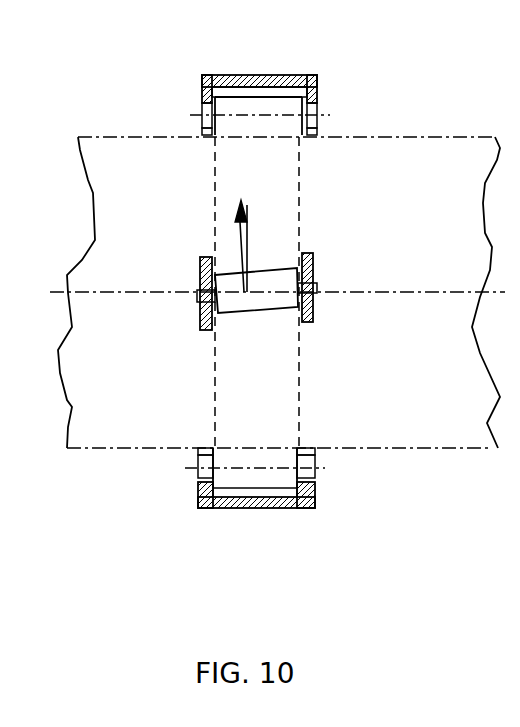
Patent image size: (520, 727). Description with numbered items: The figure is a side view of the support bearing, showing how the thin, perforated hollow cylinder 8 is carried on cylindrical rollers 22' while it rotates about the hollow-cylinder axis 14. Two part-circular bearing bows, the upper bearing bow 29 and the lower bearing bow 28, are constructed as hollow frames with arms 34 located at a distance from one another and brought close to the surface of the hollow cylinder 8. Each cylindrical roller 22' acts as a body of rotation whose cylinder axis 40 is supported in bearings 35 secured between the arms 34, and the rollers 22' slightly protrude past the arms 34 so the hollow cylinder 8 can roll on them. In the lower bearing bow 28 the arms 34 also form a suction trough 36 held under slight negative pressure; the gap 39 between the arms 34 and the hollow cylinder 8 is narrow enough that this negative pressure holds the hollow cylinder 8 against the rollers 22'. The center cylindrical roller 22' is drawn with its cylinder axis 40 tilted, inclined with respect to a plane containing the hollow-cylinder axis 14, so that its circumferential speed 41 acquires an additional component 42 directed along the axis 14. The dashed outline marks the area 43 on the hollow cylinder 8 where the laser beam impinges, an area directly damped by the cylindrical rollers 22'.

The hollow cylinder 8 is at (105, 137).
The hollow-cylinder axis 14 is at (135, 292).
The cylindrical roller 22' is at (272, 295).
The lower bearing bow 28 is at (283, 500).
The upper bearing bow 29 is at (232, 75).
The arm 34 is at (206, 75).
The bearing 35 is at (200, 110).
The suction trough 36 is at (245, 489).
The gap 39 is at (208, 133).
The cylinder axis 40 is at (257, 118).
The circumferential speed 41 is at (238, 233).
The additional component 42 is at (252, 178).
The area 43 is at (301, 195).